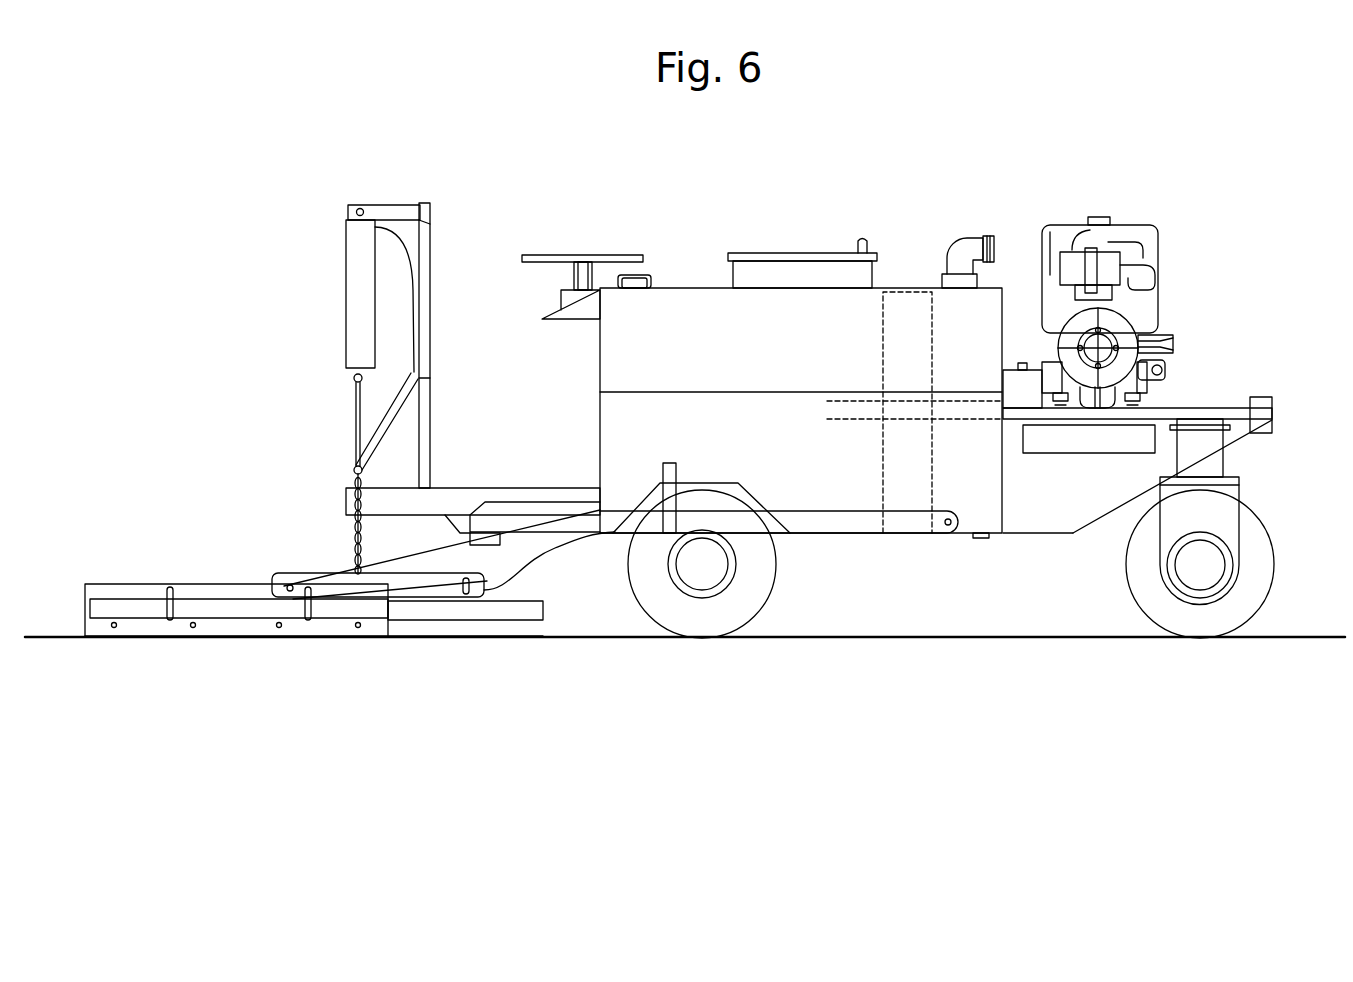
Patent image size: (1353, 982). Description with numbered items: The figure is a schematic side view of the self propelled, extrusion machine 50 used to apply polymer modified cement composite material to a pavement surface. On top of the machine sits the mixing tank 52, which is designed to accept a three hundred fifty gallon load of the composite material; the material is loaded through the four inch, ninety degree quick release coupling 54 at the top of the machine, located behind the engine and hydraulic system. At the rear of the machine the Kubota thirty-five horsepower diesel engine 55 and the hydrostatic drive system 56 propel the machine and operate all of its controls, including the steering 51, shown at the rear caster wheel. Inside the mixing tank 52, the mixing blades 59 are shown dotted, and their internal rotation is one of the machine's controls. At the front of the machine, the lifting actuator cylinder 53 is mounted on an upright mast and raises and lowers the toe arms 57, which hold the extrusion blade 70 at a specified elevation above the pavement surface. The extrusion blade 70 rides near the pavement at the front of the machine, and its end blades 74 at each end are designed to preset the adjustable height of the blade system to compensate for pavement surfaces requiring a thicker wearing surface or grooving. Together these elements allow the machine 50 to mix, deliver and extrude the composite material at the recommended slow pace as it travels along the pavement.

The self propelled, extrusion machine 50 is at (814, 188).
The steering 51 is at (1237, 460).
The mixing tank 52 is at (883, 343).
The lifting actuator cylinder 53 is at (345, 288).
The quick release coupling 54 is at (950, 272).
The diesel engine 55 is at (1165, 277).
The hydrostatic drive system 56 is at (1018, 384).
The toe arms 57 is at (525, 557).
The mixing blades 59 is at (915, 292).
The extrusion blade 70 is at (205, 582).
The end blades 74 is at (213, 642).